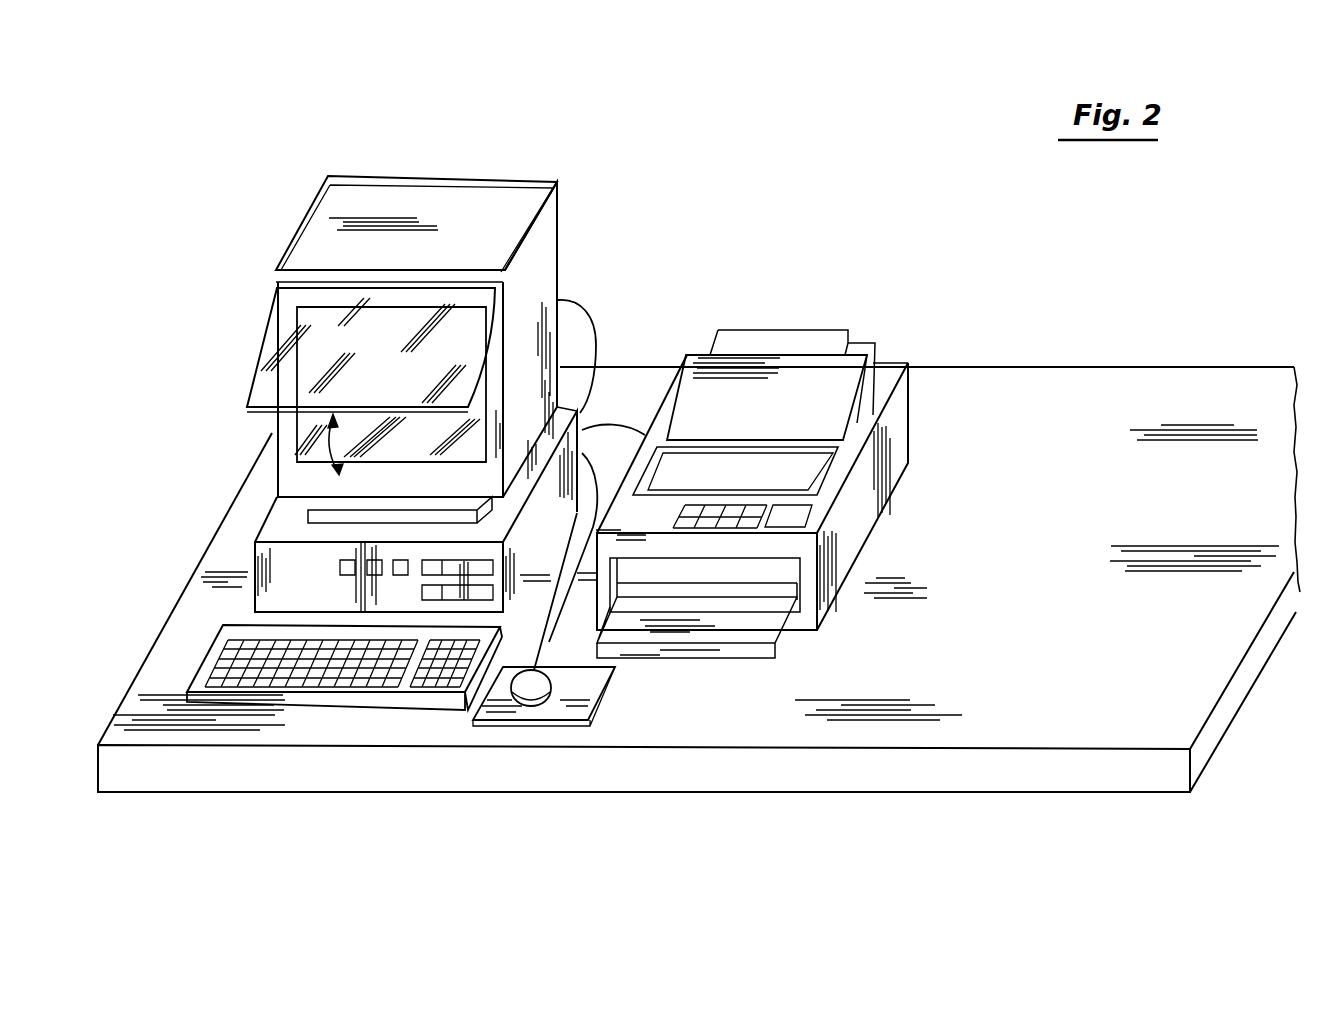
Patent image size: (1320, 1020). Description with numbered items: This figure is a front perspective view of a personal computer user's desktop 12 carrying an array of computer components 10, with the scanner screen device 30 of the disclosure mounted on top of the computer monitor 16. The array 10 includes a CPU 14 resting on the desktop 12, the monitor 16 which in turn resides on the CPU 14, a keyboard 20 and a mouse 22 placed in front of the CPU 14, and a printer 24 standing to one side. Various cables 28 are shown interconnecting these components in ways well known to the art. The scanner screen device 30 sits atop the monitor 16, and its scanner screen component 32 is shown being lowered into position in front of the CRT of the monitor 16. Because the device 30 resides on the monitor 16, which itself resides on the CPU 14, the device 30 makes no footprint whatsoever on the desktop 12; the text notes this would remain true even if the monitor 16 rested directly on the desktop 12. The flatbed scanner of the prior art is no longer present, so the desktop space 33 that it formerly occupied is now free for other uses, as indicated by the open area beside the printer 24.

The array of computer components 10 is at (847, 181).
The desktop 12 is at (688, 720).
The CPU 14 is at (293, 530).
The monitor 16 is at (550, 237).
The keyboard 20 is at (355, 680).
The mouse 22 is at (542, 693).
The printer 24 is at (890, 360).
The cables 28 is at (587, 305).
The scanner screen device 30 is at (495, 220).
The scanner screen component 32 is at (262, 345).
The desktop space 33 is at (1078, 514).